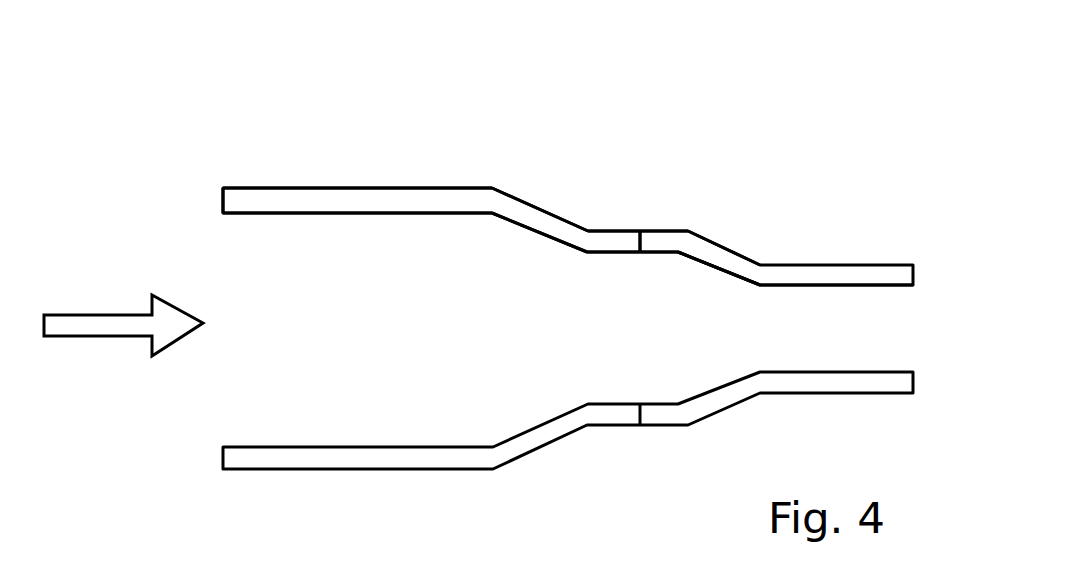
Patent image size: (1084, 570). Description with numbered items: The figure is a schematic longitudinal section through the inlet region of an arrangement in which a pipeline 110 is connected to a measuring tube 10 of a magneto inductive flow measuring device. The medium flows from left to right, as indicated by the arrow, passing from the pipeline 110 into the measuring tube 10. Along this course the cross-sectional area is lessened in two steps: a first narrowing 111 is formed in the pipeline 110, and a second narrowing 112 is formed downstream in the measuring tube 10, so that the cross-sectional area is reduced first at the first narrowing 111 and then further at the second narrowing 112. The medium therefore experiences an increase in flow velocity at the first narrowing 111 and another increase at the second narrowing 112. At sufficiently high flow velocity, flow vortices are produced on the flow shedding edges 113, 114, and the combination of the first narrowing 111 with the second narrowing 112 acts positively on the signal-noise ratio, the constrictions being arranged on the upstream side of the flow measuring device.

The measuring tube 10 is at (865, 228).
The pipeline 110 is at (348, 165).
The first narrowing 111 is at (557, 192).
The second narrowing 112 is at (737, 213).
The flow shedding edge 113 is at (582, 263).
The flow shedding edge 114 is at (752, 293).